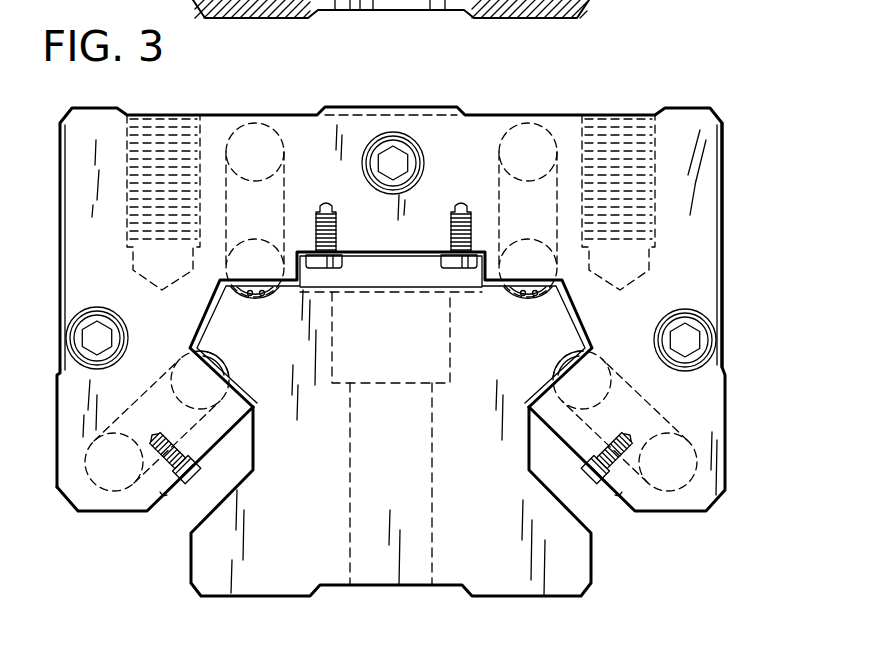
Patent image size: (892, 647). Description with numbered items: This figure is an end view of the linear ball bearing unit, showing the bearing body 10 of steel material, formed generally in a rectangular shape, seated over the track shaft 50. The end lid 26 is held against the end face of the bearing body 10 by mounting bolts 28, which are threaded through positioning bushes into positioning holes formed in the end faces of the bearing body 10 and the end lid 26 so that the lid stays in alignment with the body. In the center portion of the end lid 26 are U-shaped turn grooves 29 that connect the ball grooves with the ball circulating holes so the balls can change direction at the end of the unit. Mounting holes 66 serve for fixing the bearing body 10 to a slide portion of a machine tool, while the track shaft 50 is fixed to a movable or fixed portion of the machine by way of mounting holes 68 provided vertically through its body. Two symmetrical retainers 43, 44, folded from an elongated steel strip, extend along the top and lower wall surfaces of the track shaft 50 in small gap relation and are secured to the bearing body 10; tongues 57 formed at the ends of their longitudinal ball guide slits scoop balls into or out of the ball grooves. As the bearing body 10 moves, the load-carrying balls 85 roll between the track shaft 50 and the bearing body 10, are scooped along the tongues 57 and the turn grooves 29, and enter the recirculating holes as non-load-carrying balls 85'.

The bearing body 10 is at (783, 159).
The end lid 26 is at (713, 247).
The mounting bolt 28 is at (397, 152).
The U-shaped turn groove 29 is at (287, 183).
The retainer 43 is at (615, 497).
The retainer 44 is at (167, 497).
The track shaft 50 is at (289, 19).
The tongue 57 is at (212, 292).
The mounting hole 66 is at (135, 129).
The mounting hole 68 is at (428, 563).
The load-carrying ball 85 is at (391, 337).
The non-load-carrying ball 85' is at (402, 311).